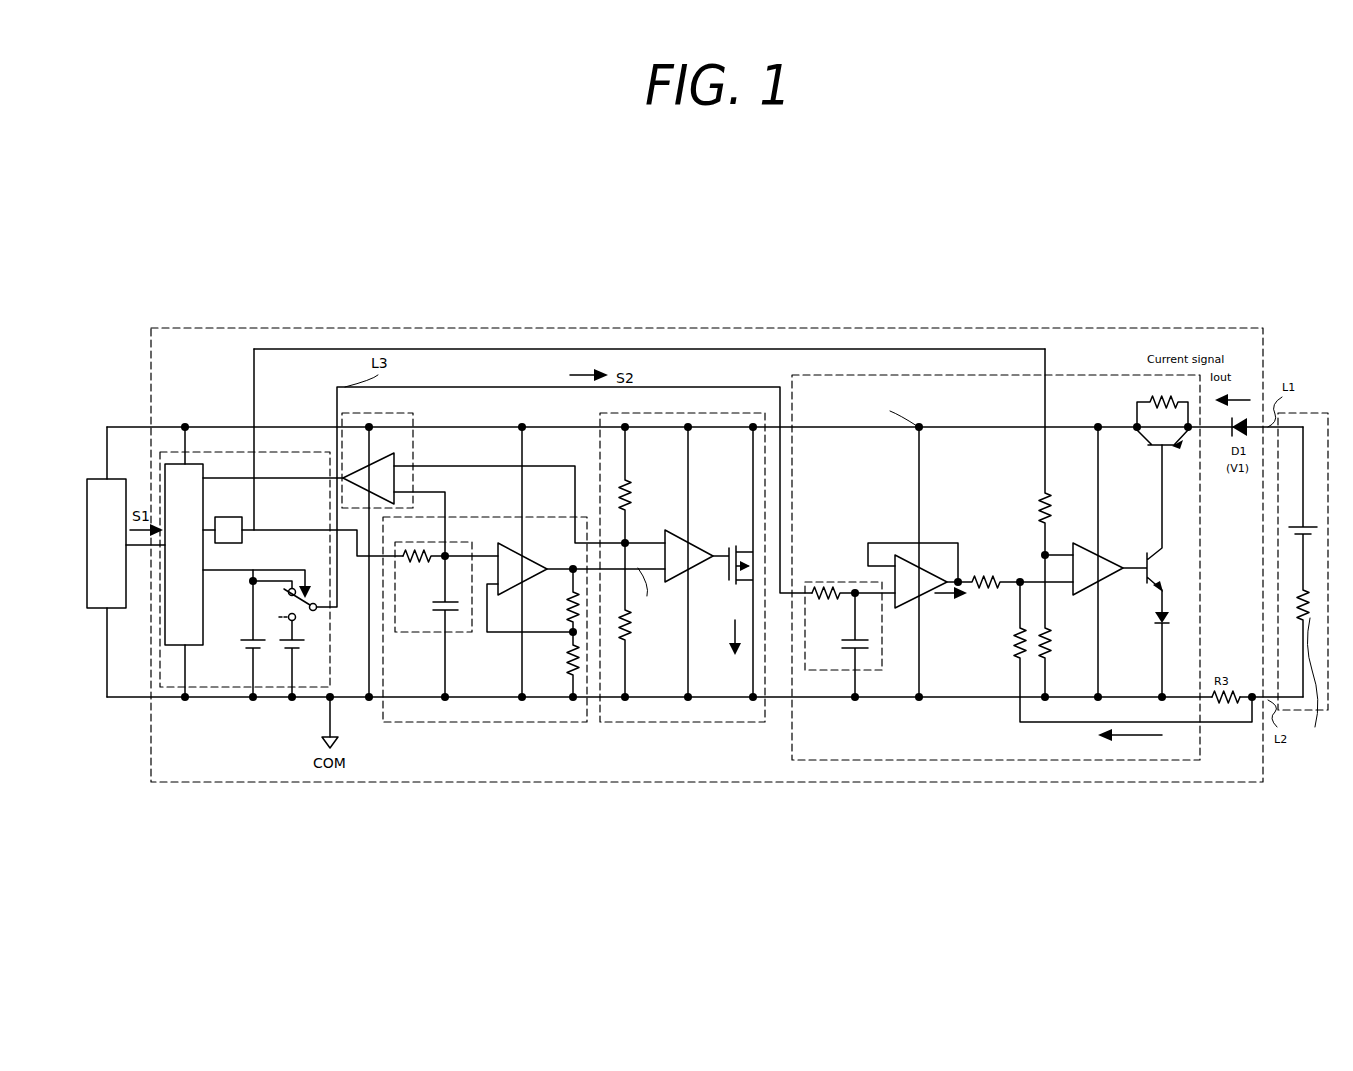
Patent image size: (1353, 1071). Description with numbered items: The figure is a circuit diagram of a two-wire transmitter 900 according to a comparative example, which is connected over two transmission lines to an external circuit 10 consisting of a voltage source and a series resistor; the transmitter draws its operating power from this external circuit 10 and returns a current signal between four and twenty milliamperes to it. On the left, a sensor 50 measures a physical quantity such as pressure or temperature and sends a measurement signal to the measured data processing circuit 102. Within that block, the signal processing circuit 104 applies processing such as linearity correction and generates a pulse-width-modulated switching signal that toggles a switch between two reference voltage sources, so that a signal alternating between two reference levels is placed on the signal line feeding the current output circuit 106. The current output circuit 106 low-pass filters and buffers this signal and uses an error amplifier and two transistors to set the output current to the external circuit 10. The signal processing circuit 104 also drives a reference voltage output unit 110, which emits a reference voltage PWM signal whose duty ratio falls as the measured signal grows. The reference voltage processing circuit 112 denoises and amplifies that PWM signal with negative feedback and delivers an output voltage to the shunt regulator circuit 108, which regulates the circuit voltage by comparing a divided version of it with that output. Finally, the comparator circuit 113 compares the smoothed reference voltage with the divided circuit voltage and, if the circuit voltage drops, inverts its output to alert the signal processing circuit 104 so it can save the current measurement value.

The two-wire transmitter 900 is at (262, 327).
The sensor 50 is at (96, 479).
The measured data processing circuit 102 is at (226, 705).
The signal processing circuit 104 is at (204, 593).
The reference voltage output unit 110 is at (229, 517).
The comparator circuit 113 is at (370, 415).
The reference voltage processing circuit 112 is at (483, 518).
The shunt regulator circuit 108 is at (650, 414).
The current output circuit 106 is at (842, 376).
The external circuit 10 is at (1303, 571).